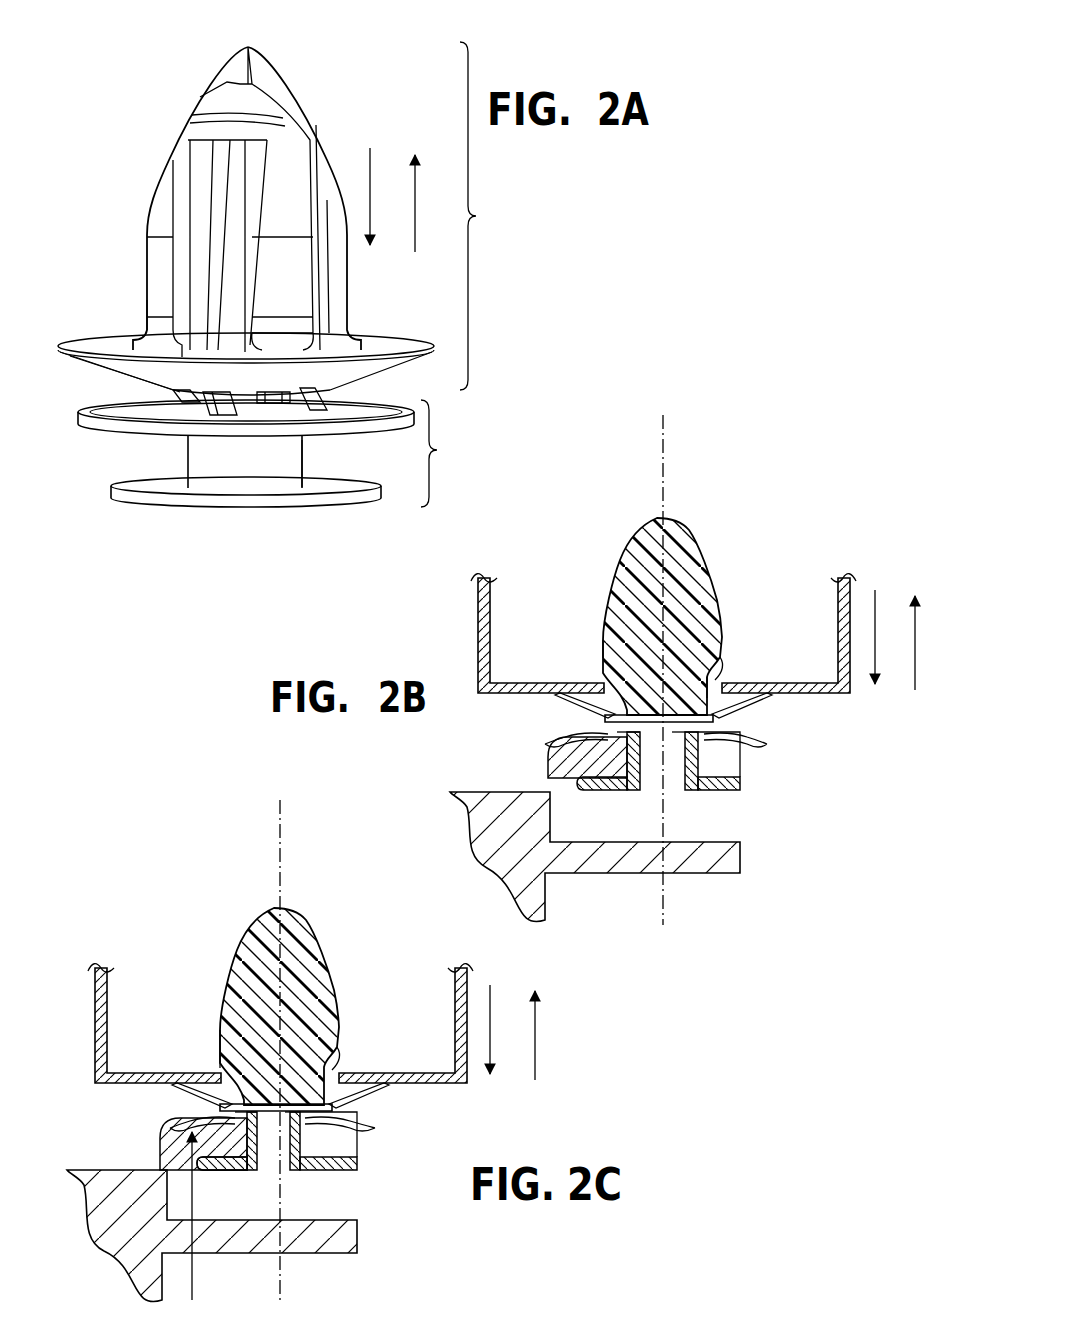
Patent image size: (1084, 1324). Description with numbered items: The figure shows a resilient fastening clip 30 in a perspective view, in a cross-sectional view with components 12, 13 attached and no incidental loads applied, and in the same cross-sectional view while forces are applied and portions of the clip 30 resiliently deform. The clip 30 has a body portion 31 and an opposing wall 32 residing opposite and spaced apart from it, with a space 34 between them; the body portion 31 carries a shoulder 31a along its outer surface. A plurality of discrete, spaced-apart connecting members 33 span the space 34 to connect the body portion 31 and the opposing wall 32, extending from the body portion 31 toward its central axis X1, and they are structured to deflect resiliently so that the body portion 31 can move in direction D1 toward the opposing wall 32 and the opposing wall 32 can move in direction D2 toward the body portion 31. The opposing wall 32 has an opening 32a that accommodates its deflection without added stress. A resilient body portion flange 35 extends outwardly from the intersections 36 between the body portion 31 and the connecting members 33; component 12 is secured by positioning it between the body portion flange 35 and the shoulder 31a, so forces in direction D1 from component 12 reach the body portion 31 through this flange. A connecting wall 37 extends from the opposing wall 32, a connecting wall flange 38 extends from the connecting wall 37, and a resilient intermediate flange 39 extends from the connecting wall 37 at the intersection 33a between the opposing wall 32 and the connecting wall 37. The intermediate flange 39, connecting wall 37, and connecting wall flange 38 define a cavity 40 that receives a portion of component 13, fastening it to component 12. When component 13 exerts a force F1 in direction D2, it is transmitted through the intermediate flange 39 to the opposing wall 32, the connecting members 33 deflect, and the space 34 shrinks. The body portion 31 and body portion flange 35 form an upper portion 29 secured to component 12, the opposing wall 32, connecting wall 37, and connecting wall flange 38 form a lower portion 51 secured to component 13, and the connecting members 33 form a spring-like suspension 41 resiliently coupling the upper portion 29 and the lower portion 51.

In FIG. 2B, the component 12 is at (633, 633).
In FIG. 2C, the component 12 is at (250, 1023).
In FIG. 2B, the component 13 is at (582, 857).
In FIG. 2C, the component 13 is at (200, 1236).
In FIG. 2A, the upper portion 29 is at (483, 216).
In FIG. 2A, the resilient clip 30 is at (196, 86).
In FIG. 2B, the resilient clip 30 is at (640, 596).
In FIG. 2C, the resilient clip 30 is at (257, 985).
In FIG. 2A, the body portion 31 is at (275, 135).
In FIG. 2B, the body portion 31 is at (684, 599).
In FIG. 2C, the body portion 31 is at (300, 990).
In FIG. 2A, the shoulder 31a is at (100, 345).
In FIG. 2B, the shoulder 31a is at (764, 656).
In FIG. 2C, the shoulder 31a is at (167, 1023).
In FIG. 2A, the opposing wall 32 is at (270, 393).
In FIG. 2B, the opposing wall 32 is at (682, 785).
In FIG. 2C, the opposing wall 32 is at (298, 1167).
In FIG. 2A, the opening 32a is at (248, 407).
In FIG. 2B, the opening 32a is at (639, 785).
In FIG. 2C, the opening 32a is at (257, 1158).
In FIG. 2A, the connecting member 33 is at (200, 405).
In FIG. 2B, the connecting member 33 is at (580, 720).
In FIG. 2C, the connecting member 33 is at (199, 1110).
In FIG. 2B, the intersection 33a is at (683, 752).
In FIG. 2C, the intersection 33a is at (303, 1133).
In FIG. 2A, the space 34 is at (177, 397).
In FIG. 2B, the space 34 is at (576, 614).
In FIG. 2C, the space 34 is at (193, 1003).
In FIG. 2A, the body portion flange 35 is at (105, 350).
In FIG. 2B, the body portion flange 35 is at (649, 654).
In FIG. 2C, the body portion flange 35 is at (258, 1054).
In FIG. 2B, the intersection 36 is at (748, 626).
In FIG. 2C, the intersection 36 is at (375, 1019).
In FIG. 2A, the connecting wall 37 is at (207, 453).
In FIG. 2B, the connecting wall 37 is at (541, 761).
In FIG. 2C, the connecting wall 37 is at (155, 1141).
In FIG. 2A, the connecting wall flange 38 is at (133, 497).
In FIG. 2B, the connecting wall flange 38 is at (591, 808).
In FIG. 2C, the connecting wall flange 38 is at (222, 1188).
In FIG. 2A, the intermediate flange 39 is at (97, 423).
In FIG. 2B, the intermediate flange 39 is at (548, 755).
In FIG. 2C, the intermediate flange 39 is at (163, 1144).
In FIG. 2A, the cavity 40 is at (327, 458).
In FIG. 2B, the cavity 40 is at (744, 785).
In FIG. 2C, the cavity 40 is at (356, 1162).
In FIG. 2A, the suspension 41 is at (363, 376).
In FIG. 2A, the lower portion 51 is at (443, 453).
In FIG. 2B, the central axis X1 is at (692, 669).
In FIG. 2C, the central axis X1 is at (308, 1050).
In FIG. 2A, the direction D1 is at (386, 196).
In FIG. 2B, the direction D1 is at (891, 637).
In FIG. 2C, the direction D1 is at (505, 1029).
In FIG. 2A, the direction D2 is at (432, 203).
In FIG. 2B, the direction D2 is at (932, 643).
In FIG. 2C, the direction D2 is at (552, 1035).
In FIG. 2C, the force F1 is at (206, 1216).